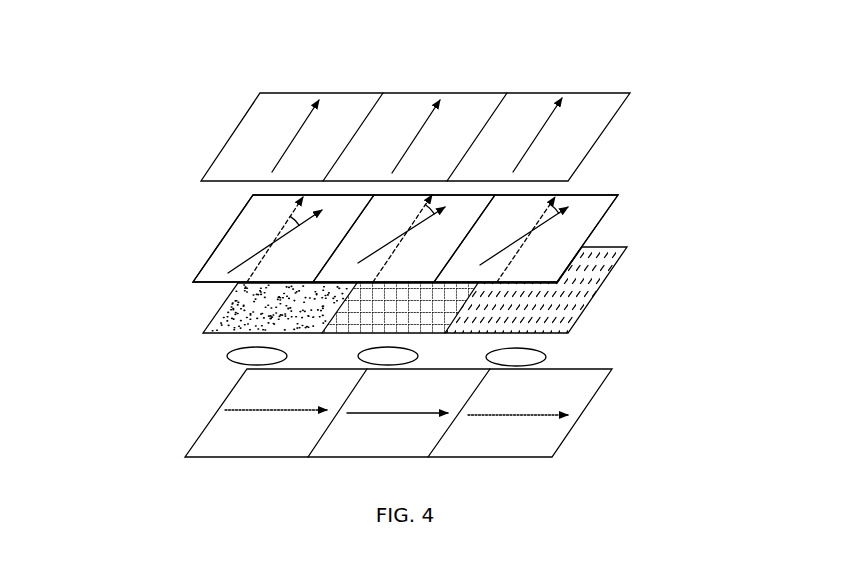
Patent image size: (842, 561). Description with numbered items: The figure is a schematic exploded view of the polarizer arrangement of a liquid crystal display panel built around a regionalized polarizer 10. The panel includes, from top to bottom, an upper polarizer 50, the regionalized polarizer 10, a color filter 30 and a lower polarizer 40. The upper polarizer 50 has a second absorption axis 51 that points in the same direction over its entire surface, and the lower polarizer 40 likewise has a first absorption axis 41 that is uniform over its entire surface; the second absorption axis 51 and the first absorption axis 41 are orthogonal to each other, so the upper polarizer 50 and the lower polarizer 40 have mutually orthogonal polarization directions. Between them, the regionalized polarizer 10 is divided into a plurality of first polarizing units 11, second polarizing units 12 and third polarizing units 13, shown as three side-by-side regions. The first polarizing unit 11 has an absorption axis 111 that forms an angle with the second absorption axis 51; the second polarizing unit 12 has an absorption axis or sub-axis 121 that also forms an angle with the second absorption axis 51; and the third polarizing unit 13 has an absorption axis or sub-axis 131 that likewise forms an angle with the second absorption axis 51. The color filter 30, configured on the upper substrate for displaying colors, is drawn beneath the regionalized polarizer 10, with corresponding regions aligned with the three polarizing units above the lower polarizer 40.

The regionalized polarizer 10 is at (553, 265).
The first polarizing unit 11 is at (258, 234).
The absorption axis 111 is at (237, 265).
The second polarizing unit 12 is at (390, 203).
The absorption axis or sub-axis 121 is at (385, 242).
The third polarizing unit 13 is at (593, 205).
The absorption axis or sub-axis 131 is at (497, 252).
The color filter 30 is at (570, 288).
The lower polarizer 40 is at (547, 389).
The first absorption axis 41 is at (542, 412).
The upper polarizer 50 is at (563, 158).
The second absorption axis 51 is at (308, 113).